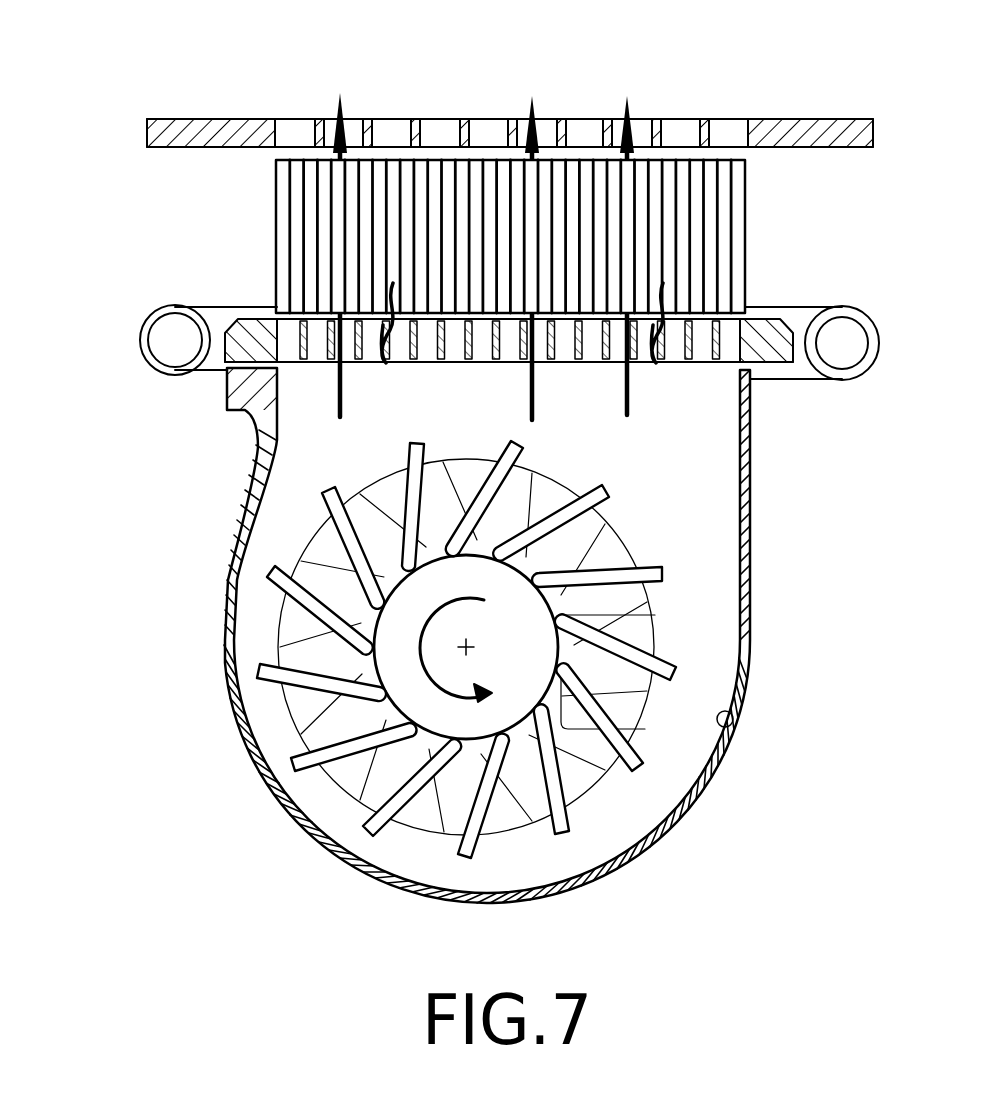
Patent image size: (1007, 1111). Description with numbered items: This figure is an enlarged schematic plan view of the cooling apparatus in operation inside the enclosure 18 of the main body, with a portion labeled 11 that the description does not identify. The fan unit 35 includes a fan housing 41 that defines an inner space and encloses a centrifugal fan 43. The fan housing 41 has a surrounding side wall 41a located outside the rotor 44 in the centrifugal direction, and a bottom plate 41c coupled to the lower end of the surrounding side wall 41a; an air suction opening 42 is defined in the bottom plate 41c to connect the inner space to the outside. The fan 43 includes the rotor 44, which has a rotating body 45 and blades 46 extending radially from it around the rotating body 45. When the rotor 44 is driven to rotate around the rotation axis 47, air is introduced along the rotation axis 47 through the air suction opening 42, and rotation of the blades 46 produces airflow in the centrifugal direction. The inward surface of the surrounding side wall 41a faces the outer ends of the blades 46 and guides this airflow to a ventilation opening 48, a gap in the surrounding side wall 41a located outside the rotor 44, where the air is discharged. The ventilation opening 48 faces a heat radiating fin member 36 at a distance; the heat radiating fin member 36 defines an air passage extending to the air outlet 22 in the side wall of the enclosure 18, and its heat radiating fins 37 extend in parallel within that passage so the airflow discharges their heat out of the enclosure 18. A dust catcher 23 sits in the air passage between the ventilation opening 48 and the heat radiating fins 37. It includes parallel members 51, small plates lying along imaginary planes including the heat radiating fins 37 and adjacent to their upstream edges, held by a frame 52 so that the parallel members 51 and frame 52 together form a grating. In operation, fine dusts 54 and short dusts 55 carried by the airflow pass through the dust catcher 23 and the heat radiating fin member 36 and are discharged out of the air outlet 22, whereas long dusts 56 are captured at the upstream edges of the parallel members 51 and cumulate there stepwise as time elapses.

The electronic apparatus housing wall 11 is at (234, 112).
The enclosure 18 is at (516, 74).
The air outlet 22 is at (743, 121).
The dust catcher 23 is at (227, 318).
The fan unit 35 is at (480, 635).
The heat radiating fin member 36 is at (451, 160).
The heat radiating fins 37 is at (481, 186).
The fan housing 41 is at (528, 635).
The surrounding side wall 41a is at (733, 712).
The bottom plate 41c is at (713, 502).
The air suction openings 42 is at (533, 663).
The fan 43 is at (718, 562).
The rotor 44 is at (686, 676).
The rotating body 45 is at (655, 617).
The blades 46 is at (635, 760).
The rotation axis 47 is at (468, 653).
The ventilation opening 48 is at (765, 360).
The parallel members 51 is at (327, 350).
The frame 52 is at (509, 339).
The fine dusts 54 is at (300, 107).
The short dusts 55 is at (333, 90).
The long dusts 56 is at (386, 363).